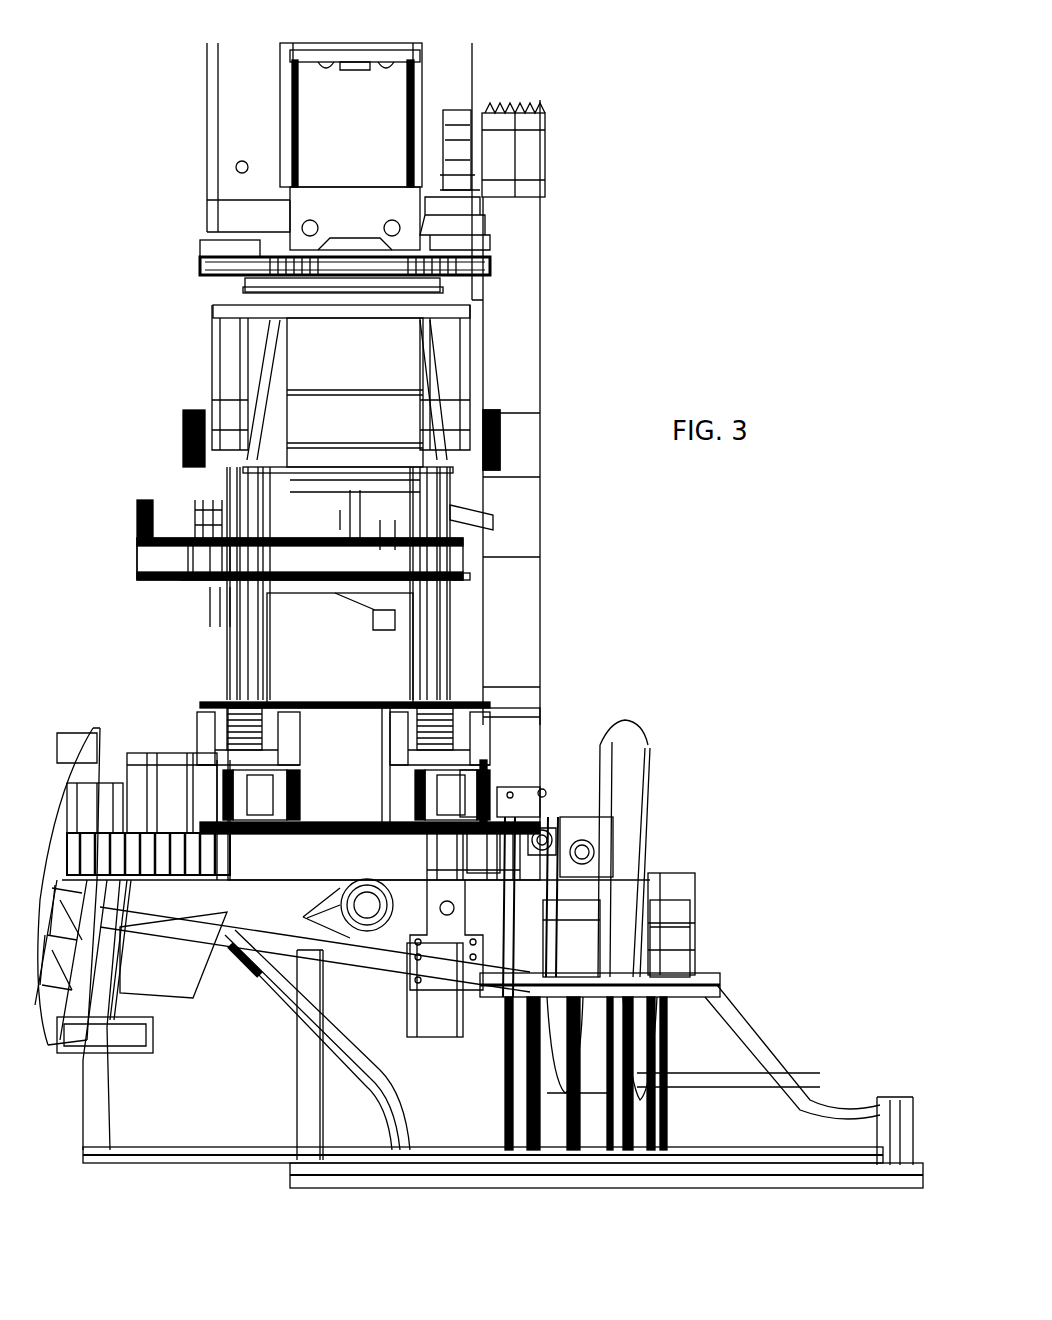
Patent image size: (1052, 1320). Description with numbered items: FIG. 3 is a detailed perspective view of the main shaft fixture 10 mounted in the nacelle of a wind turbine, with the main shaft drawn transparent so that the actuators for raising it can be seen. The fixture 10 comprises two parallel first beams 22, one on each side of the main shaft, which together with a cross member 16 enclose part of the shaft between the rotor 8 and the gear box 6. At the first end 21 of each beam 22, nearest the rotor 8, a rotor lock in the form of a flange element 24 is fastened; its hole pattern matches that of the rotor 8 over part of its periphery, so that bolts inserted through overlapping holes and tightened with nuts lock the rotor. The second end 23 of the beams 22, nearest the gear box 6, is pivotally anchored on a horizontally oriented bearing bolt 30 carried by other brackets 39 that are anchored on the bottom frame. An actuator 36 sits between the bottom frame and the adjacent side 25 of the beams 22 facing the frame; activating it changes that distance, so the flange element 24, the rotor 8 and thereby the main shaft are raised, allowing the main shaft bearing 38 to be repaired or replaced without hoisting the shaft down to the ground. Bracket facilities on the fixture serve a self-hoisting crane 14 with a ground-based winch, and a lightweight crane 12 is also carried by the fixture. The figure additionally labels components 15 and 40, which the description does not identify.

The self-hoisting crane 14 is at (186, 166).
The lightweight crane 12 is at (523, 366).
The main shaft fixture 10 is at (165, 676).
The flange element 24 is at (95, 735).
The main shaft bearing 38 is at (175, 755).
The first end 21 is at (110, 780).
The cross member 16 is at (380, 770).
The first beams 22 is at (307, 864).
The mounting plate 40 is at (545, 792).
The gear box 6 is at (608, 768).
The second end 23 is at (565, 840).
The bearing bolt 30 is at (620, 850).
The other brackets 39 is at (648, 888).
The actuator 36 is at (227, 950).
The adjacent side 25 is at (288, 888).
The cylinder 15 is at (445, 1022).
The rotor 8 is at (48, 1018).